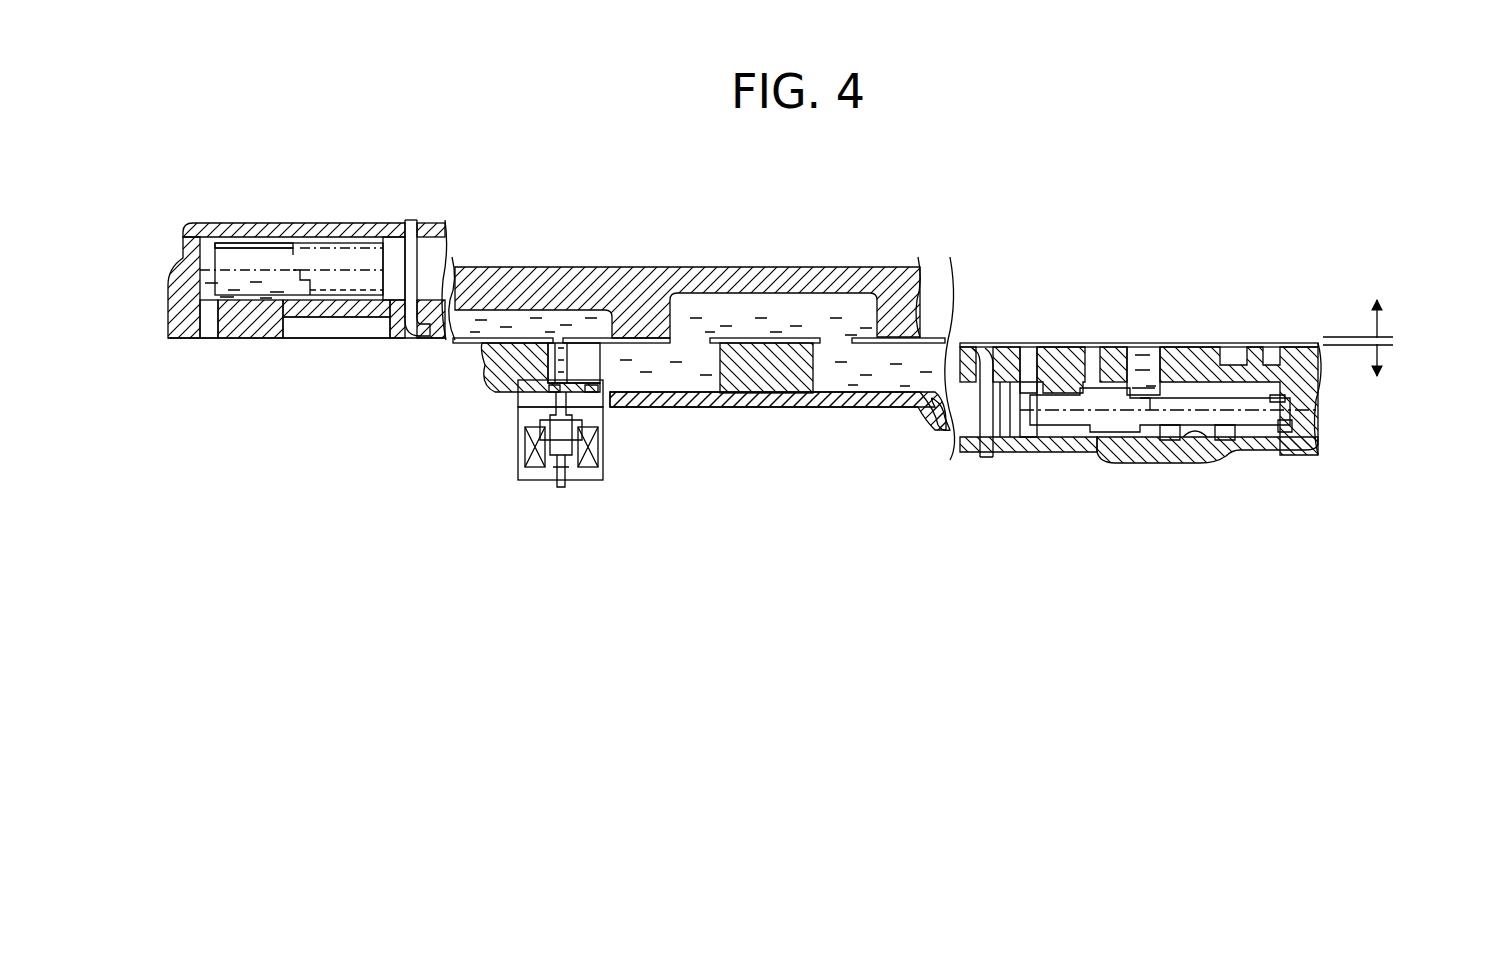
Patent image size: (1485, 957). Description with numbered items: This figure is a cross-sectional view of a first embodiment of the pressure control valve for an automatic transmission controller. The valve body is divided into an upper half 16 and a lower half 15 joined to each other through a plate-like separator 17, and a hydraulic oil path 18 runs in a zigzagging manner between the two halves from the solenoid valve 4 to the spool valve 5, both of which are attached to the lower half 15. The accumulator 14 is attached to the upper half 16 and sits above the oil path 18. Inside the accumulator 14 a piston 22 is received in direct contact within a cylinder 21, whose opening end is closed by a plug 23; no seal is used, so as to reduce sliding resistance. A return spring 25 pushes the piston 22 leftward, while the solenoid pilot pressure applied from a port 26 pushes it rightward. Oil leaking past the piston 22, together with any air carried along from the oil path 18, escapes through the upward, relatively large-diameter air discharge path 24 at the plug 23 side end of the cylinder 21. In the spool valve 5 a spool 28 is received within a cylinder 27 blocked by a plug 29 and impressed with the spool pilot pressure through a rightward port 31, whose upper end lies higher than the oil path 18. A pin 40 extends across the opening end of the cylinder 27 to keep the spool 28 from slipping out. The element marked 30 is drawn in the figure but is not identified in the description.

The solenoid valve 4 is at (528, 498).
The spool valve 5 is at (1207, 424).
The accumulator 14 is at (250, 186).
The lower half 15 is at (1218, 424).
The upper half 16 is at (1214, 349).
The plate-like separator 17 is at (933, 345).
The hydraulic oil path 18 is at (694, 320).
The cylinder 21 is at (336, 246).
The piston 22 is at (238, 232).
The plug 23 is at (402, 242).
The air discharge path 24 is at (379, 234).
The return spring 25 is at (308, 240).
The port 26 is at (210, 312).
The cylinder 27 is at (1192, 440).
The spool 28 is at (1170, 385).
The plug 29 is at (1004, 452).
The land 30 is at (1040, 445).
The port 31 is at (1030, 345).
The pin 40 is at (990, 460).